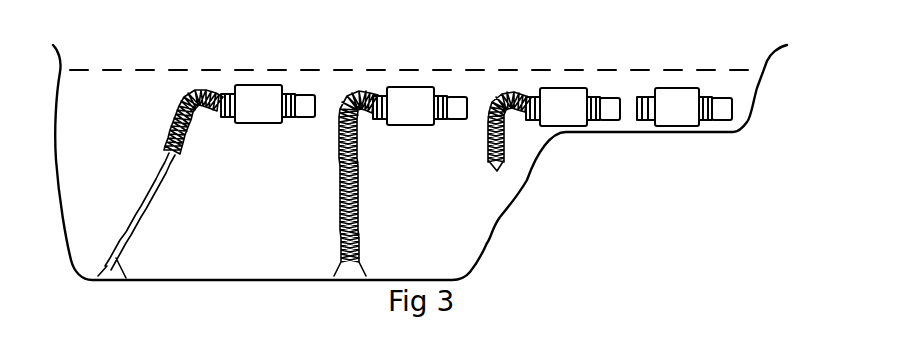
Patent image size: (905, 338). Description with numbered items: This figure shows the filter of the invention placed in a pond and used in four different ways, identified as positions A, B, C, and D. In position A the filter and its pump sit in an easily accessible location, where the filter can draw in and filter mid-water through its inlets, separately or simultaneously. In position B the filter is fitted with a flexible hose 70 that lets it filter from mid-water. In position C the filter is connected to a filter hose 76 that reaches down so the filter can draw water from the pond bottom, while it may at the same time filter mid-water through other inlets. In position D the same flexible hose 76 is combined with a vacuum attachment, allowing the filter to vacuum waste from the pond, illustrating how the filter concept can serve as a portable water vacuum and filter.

The flexible hose 70 is at (484, 148).
The flexible hose 76 is at (173, 117).
The position A is at (684, 76).
The position B is at (573, 74).
The position C is at (420, 75).
The position D is at (268, 70).